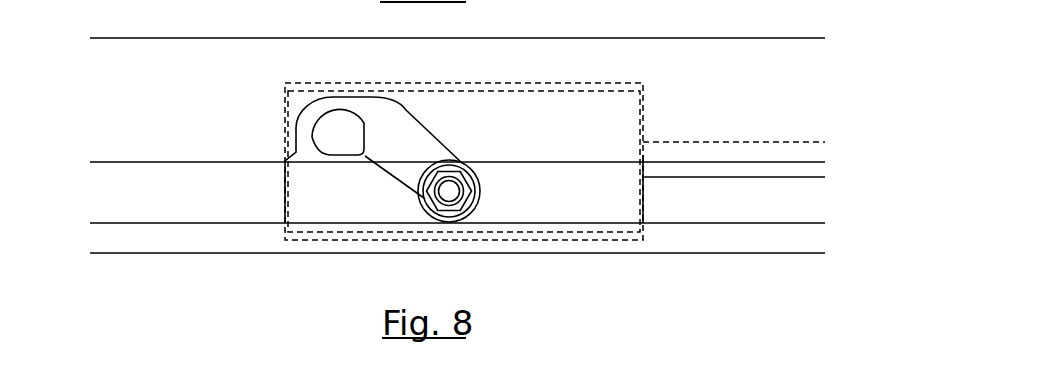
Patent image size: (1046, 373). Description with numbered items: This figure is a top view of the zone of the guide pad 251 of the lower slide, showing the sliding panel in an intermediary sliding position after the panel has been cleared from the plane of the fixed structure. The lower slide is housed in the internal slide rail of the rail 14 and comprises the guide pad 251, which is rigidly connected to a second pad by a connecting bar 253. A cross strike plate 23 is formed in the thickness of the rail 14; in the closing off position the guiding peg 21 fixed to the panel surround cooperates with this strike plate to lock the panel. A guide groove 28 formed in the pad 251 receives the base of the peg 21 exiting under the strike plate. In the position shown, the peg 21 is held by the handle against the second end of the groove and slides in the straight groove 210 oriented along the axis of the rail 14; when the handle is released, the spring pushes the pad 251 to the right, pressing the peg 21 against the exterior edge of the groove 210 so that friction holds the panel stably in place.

The rail 14 is at (123, 243).
The guiding peg 21 is at (450, 192).
The cross strike plate 23 is at (296, 128).
The guide groove 28 is at (388, 172).
The guide pad 251 is at (587, 197).
The connecting bar 253 is at (707, 177).
The straight groove 210 is at (787, 197).